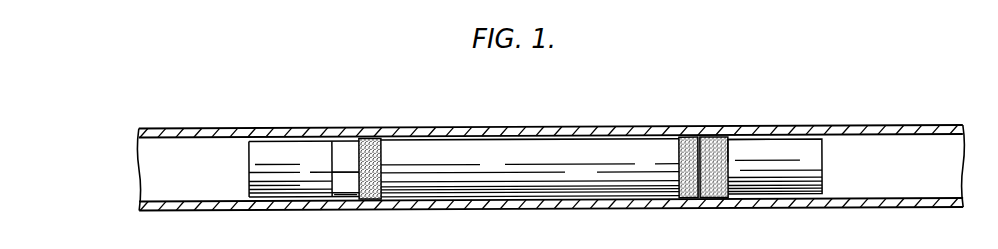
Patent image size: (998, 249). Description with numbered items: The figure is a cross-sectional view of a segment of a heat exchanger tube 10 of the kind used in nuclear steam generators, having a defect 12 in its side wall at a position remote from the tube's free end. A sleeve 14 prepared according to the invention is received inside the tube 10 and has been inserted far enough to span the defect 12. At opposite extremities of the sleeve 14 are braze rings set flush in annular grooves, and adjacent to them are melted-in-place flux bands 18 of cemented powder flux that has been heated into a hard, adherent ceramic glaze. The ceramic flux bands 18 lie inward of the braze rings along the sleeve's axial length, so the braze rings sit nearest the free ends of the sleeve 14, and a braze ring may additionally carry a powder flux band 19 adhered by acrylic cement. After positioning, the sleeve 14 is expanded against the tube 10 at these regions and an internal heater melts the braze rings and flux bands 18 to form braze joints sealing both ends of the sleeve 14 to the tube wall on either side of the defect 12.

The heat exchanger tube 10 is at (550, 149).
The defect 12 is at (513, 134).
The sleeve 14 is at (799, 147).
The ceramic flux band 18 is at (375, 141).
The powder flux band 19 is at (730, 155).